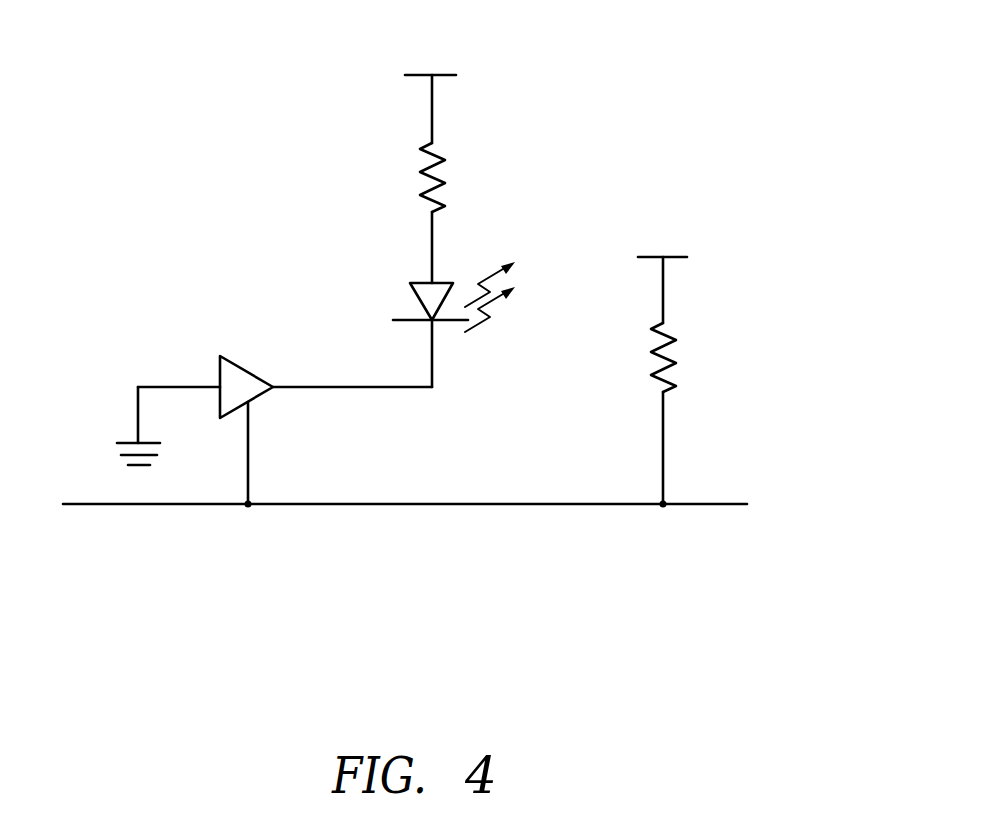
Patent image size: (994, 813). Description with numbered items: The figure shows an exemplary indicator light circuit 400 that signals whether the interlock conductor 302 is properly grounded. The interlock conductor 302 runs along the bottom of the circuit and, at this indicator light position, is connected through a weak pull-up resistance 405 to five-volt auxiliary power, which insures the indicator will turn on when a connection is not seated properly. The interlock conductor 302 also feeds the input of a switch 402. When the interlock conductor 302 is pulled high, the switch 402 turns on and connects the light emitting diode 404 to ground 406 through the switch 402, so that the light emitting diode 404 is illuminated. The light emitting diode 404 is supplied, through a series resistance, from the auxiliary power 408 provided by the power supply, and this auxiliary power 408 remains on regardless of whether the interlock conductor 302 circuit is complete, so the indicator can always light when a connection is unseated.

The indicator light circuit 400 is at (588, 180).
The switch 402 is at (237, 358).
The light emitting diode (LED) 404 is at (420, 282).
The resistance 405 is at (680, 355).
The ground 406 is at (128, 440).
The auxiliary power 408 is at (420, 75).
The interlock conductor 302 is at (209, 507).